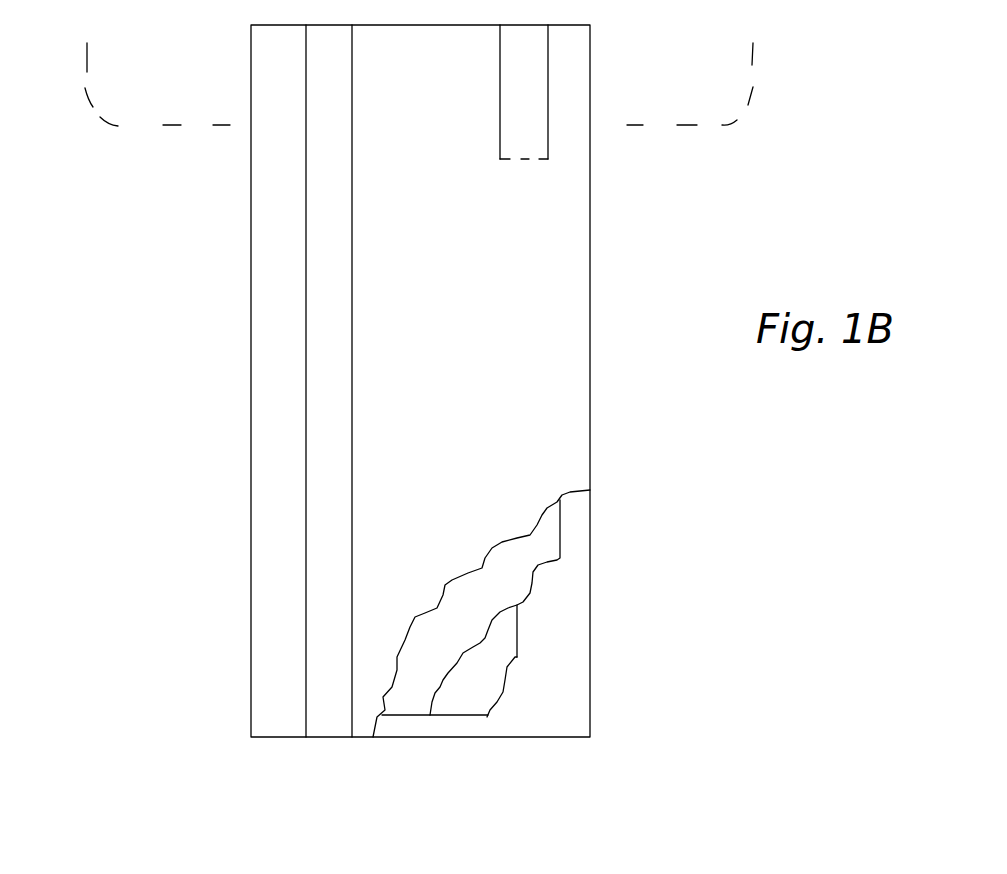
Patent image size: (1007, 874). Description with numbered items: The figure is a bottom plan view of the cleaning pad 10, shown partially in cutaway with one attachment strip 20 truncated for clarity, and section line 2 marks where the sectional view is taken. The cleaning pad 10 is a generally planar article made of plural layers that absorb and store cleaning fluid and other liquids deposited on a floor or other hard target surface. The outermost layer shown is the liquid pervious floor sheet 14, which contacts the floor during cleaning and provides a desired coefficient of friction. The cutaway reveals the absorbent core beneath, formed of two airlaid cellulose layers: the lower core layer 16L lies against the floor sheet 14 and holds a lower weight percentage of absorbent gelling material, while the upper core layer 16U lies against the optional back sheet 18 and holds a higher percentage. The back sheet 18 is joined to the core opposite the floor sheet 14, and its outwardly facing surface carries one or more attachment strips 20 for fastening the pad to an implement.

The cleaning pad 10 is at (119, 570).
The floor sheet 14 is at (564, 718).
The upper core layer 16U is at (476, 643).
The lower core layer 16L is at (488, 702).
The back sheet 18 is at (286, 319).
The attachment strip 20 is at (346, 199).
The section line 2 is at (416, 66).